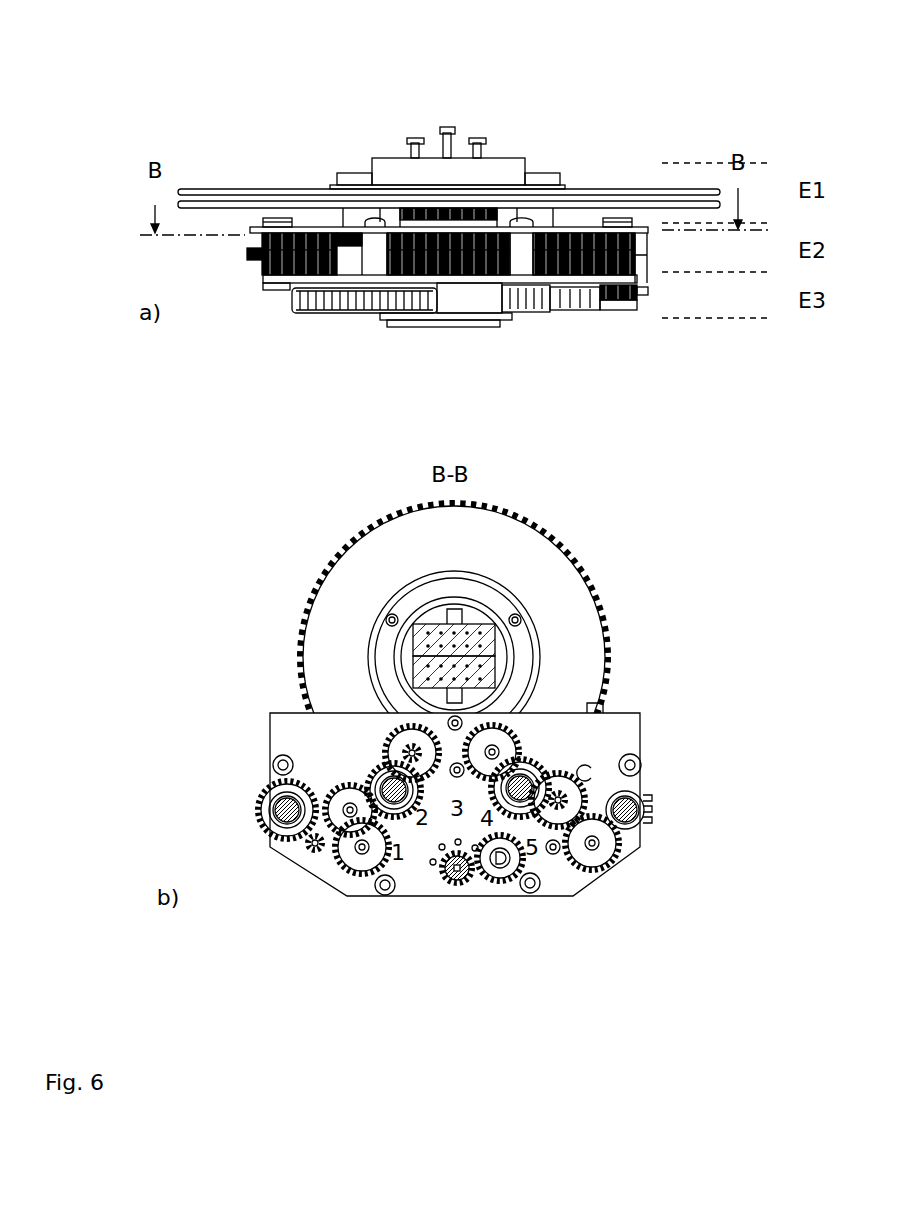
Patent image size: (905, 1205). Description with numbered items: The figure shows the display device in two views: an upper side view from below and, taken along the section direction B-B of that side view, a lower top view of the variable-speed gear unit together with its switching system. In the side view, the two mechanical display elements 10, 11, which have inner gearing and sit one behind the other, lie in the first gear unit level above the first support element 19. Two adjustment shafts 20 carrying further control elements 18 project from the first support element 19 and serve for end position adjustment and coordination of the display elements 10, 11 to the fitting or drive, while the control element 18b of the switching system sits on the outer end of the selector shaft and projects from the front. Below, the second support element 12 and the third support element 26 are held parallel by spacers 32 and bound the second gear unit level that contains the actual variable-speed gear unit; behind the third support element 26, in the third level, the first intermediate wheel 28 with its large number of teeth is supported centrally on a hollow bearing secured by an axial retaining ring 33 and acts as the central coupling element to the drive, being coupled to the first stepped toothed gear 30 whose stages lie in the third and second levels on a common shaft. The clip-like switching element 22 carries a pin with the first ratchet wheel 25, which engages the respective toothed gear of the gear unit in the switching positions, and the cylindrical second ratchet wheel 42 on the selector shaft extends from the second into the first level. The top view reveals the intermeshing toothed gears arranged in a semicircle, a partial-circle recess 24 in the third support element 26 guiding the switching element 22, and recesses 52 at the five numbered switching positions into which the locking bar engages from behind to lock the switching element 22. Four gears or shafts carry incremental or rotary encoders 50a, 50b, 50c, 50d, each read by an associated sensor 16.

The mechanical display element 10 is at (240, 190).
The mechanical display element 11 is at (274, 199).
The second support element 12 is at (253, 232).
The sensor 16 is at (265, 252).
The control element 18 is at (412, 138).
The control element 18b is at (443, 128).
The first support element 19 is at (372, 165).
The adjustment shaft 20 is at (410, 150).
The switching element 22 is at (468, 302).
The recess 24 is at (457, 875).
The first ratchet wheel 25 is at (500, 870).
The third support element 26 is at (288, 262).
The first intermediate wheel 28 is at (530, 303).
The first stepped toothed gear 30 is at (655, 812).
The spacer 32 is at (373, 265).
The axial retaining ring 33 is at (472, 325).
The second ratchet wheel 42 is at (478, 278).
The incremental encoder 50a is at (290, 827).
The incremental encoder 50b is at (397, 803).
The incremental encoder 50c is at (522, 800).
The incremental encoder 50d is at (633, 818).
The recess 52 is at (442, 850).